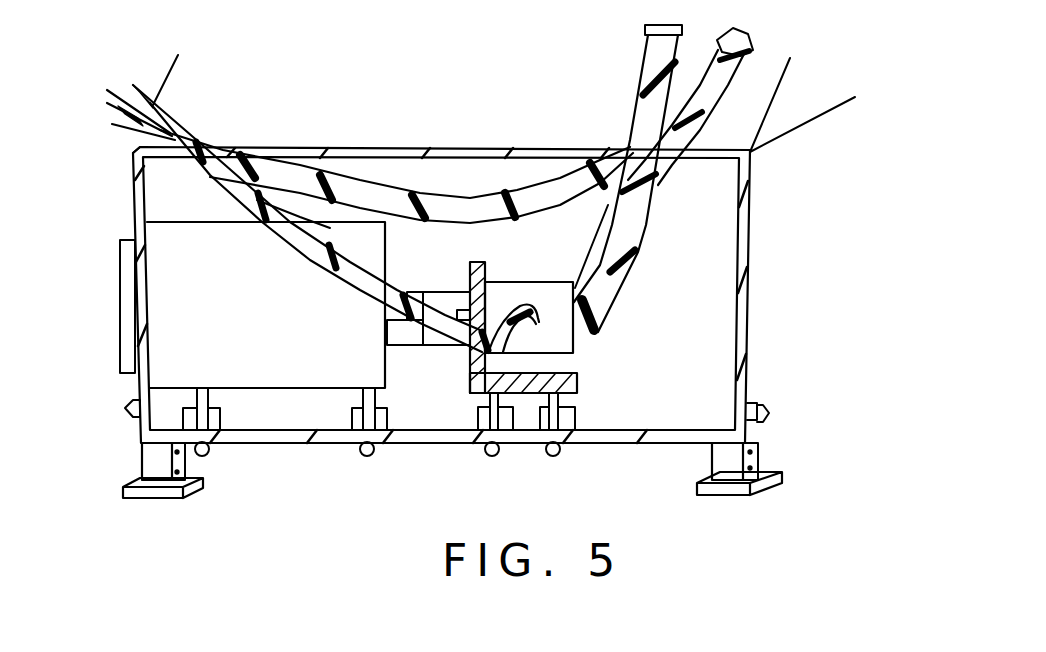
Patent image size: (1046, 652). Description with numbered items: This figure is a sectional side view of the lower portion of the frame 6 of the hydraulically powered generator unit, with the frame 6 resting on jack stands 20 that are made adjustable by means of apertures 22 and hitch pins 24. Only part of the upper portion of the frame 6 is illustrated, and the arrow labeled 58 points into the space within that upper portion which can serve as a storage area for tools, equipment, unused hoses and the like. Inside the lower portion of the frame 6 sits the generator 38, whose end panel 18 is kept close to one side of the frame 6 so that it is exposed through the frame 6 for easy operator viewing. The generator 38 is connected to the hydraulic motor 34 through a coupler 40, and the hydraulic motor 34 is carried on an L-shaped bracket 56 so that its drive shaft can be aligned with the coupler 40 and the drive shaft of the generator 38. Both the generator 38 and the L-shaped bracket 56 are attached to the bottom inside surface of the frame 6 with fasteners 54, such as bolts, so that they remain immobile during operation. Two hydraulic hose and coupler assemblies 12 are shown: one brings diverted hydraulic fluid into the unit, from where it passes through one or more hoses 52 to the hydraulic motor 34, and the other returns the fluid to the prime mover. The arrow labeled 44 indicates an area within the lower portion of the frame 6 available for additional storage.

The frame 6 is at (747, 221).
The hydraulic hose and coupler 12 is at (700, 108).
The end panel 18 is at (128, 287).
The jack stands 20 is at (150, 465).
The apertures 22 is at (182, 471).
The hitch pins 24 is at (125, 407).
The hydraulic motor 34 is at (557, 337).
The generator 38 is at (187, 347).
The coupler 40 is at (443, 302).
The arrow indicating storage area 44 is at (699, 311).
The hoses 52 is at (297, 237).
The fasteners 54 is at (368, 455).
The L-shaped bracket 56 is at (577, 387).
The arrow indicating upper storage area 58 is at (841, 52).